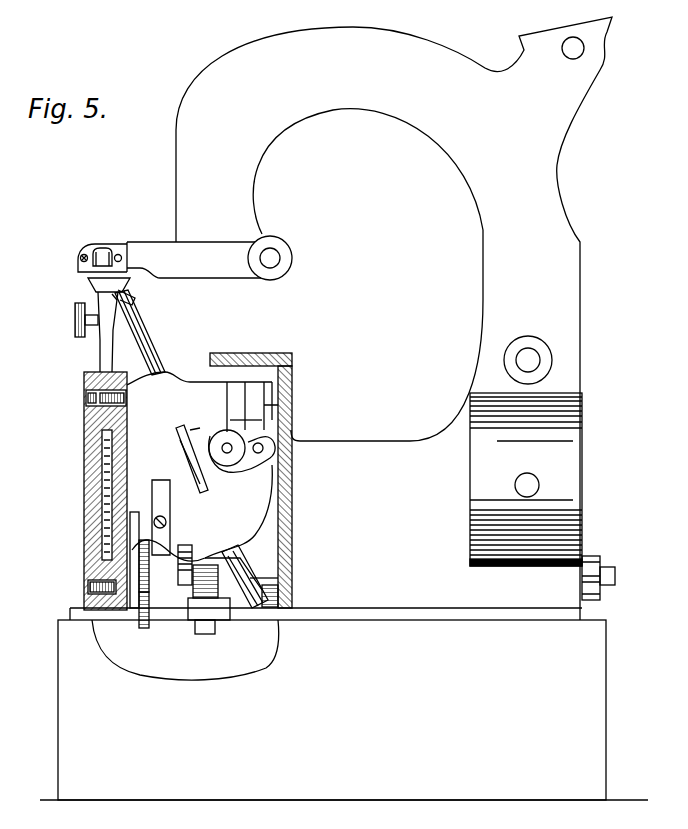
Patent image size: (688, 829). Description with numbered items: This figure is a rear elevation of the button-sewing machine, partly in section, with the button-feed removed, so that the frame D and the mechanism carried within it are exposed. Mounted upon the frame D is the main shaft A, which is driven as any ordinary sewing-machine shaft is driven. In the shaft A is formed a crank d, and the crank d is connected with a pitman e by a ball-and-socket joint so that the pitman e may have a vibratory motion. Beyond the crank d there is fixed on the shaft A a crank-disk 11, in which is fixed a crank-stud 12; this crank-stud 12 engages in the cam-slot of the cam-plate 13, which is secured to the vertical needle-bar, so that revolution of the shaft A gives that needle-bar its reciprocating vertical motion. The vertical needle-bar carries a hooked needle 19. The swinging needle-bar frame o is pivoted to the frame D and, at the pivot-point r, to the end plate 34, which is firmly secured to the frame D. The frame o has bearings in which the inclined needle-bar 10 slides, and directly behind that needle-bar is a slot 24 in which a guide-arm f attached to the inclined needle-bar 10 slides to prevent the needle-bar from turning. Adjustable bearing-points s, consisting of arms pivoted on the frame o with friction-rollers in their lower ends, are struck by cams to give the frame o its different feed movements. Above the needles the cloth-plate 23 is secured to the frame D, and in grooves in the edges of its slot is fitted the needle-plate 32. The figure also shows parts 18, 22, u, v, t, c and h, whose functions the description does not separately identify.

The frame D is at (350, 516).
The shaft A is at (615, 578).
The inclined needle-bar 10 is at (150, 352).
The crank-disk 11 is at (149, 610).
The crank-stud 12 is at (148, 576).
The cam-plate 13 is at (137, 514).
The clamp jaw 18 is at (107, 250).
The hooked needle 19 is at (96, 252).
The head 22 is at (106, 292).
The cloth-plate 23 is at (122, 259).
The slot 24 is at (202, 527).
The needle-plate 32 is at (90, 275).
The end plate 34 is at (84, 522).
The adjustable bearing-point s is at (246, 406).
The roller u is at (227, 447).
The pin v is at (254, 441).
The cam t is at (242, 458).
The swinging needle-bar frame o is at (199, 419).
The guide-arm f is at (190, 446).
The pitman e is at (161, 517).
The crank d is at (180, 584).
The hub c is at (195, 605).
The slide h is at (245, 578).
The pivot-point r is at (264, 588).